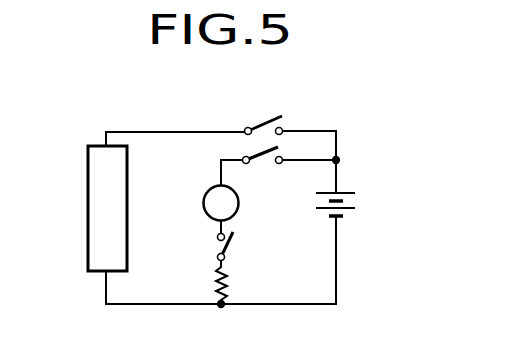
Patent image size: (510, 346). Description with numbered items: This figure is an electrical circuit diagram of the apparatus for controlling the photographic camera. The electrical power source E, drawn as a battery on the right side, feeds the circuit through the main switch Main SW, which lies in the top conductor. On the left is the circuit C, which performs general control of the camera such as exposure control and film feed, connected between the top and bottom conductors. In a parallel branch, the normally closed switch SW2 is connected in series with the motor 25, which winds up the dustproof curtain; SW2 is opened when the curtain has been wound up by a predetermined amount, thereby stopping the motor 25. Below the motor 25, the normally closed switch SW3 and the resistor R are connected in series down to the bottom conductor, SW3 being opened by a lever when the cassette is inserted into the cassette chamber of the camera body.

The control circuit C is at (97, 212).
The main switch Main SW is at (262, 116).
The normally closed switch SW2 is at (278, 149).
The motor 25 is at (238, 203).
The normally closed switch SW3 is at (229, 246).
The resistor R is at (216, 276).
The electrical power source E is at (346, 204).